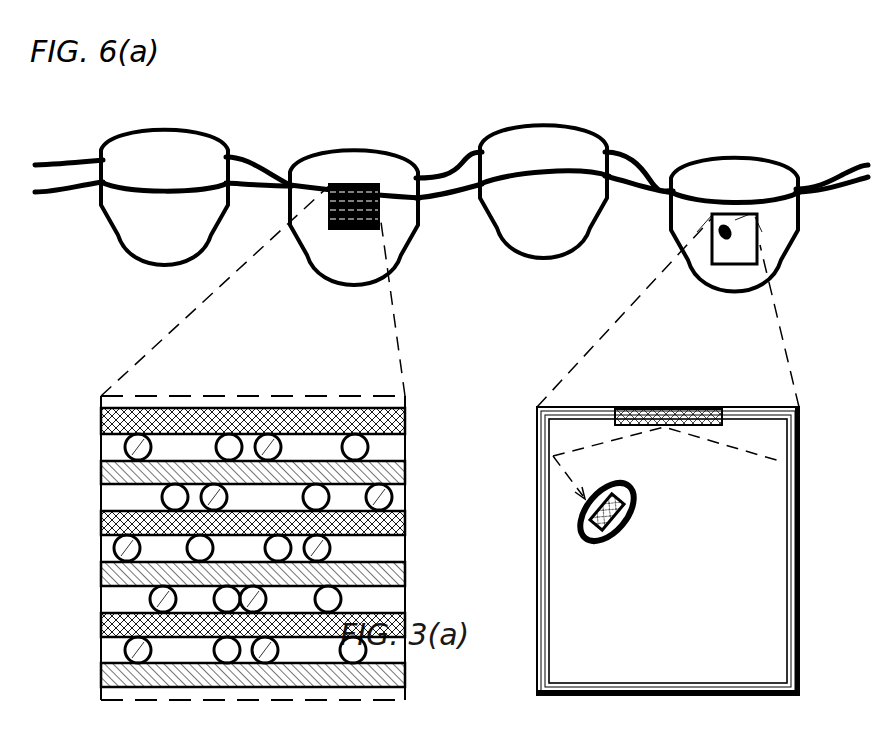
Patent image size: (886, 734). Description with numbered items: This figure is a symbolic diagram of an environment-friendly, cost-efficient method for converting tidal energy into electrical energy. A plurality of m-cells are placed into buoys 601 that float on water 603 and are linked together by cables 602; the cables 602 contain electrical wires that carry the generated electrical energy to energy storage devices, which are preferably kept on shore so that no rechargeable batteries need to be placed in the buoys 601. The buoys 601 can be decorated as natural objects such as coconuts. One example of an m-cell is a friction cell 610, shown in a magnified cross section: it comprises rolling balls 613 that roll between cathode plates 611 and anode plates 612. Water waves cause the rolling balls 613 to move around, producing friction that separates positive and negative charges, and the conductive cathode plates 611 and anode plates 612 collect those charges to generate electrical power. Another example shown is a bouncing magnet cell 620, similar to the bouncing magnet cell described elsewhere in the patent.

The buoy 601 is at (160, 148).
The cable 602 is at (58, 163).
The water 603 is at (462, 194).
The friction cell 610 is at (248, 501).
The cathode plate 611 is at (101, 422).
The anode plate 612 is at (101, 470).
The rolling ball 613 is at (290, 406).
The bouncing magnet cell 620 is at (690, 240).